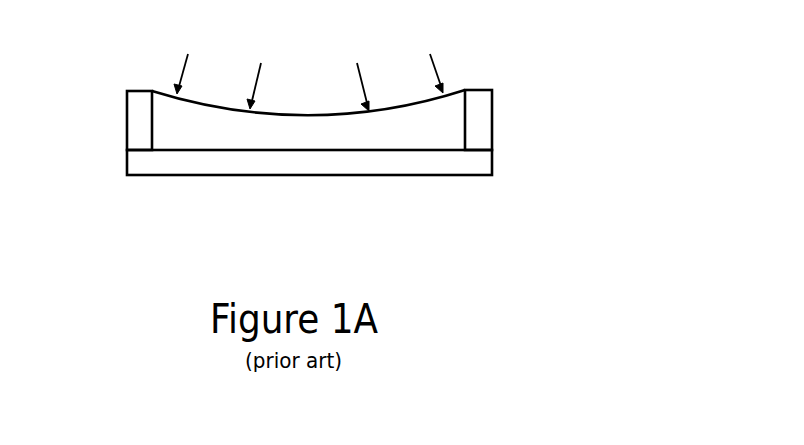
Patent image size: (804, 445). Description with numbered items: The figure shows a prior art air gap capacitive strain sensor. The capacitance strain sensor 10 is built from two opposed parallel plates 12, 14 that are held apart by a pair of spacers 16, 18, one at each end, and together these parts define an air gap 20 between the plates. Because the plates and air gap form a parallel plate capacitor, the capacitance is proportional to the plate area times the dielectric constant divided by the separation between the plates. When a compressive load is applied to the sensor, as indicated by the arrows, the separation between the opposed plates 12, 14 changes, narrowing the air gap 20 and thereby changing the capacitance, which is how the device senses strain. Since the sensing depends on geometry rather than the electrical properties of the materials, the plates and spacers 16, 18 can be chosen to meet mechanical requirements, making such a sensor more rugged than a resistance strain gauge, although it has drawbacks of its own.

The capacitance strain sensor 10 is at (538, 74).
The parallel plate 12 is at (456, 92).
The parallel plate 14 is at (445, 152).
The spacer 16 is at (130, 117).
The spacer 18 is at (485, 125).
The air gap 20 is at (302, 133).